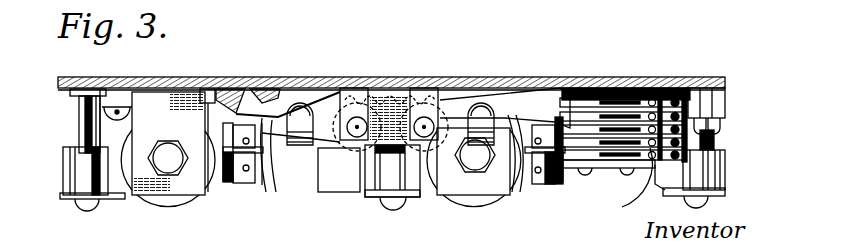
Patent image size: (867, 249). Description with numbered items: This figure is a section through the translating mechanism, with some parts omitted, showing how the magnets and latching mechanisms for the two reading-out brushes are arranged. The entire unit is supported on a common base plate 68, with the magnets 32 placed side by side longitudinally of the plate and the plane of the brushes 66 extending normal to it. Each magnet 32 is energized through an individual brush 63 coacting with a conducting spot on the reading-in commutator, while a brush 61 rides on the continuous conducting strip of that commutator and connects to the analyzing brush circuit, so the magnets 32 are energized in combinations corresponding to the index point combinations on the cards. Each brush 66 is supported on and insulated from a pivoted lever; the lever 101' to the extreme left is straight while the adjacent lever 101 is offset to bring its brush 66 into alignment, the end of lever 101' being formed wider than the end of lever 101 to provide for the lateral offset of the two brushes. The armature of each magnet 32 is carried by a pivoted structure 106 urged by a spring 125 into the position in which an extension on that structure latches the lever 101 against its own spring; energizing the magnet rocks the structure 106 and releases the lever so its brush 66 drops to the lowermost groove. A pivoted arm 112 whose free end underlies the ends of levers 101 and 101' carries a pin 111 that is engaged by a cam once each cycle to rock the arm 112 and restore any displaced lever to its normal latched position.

The magnet 32 is at (168, 198).
The brush 61 is at (642, 82).
The brush 63 is at (612, 165).
The brush 66 is at (248, 188).
The base plate 68 is at (220, 95).
The pivoted lever 101 is at (443, 113).
The lever 101' is at (384, 165).
The pivoted structure 106 is at (119, 185).
The pin 111 is at (300, 97).
The pivoted arm 112 is at (340, 100).
The spring 125 is at (77, 147).